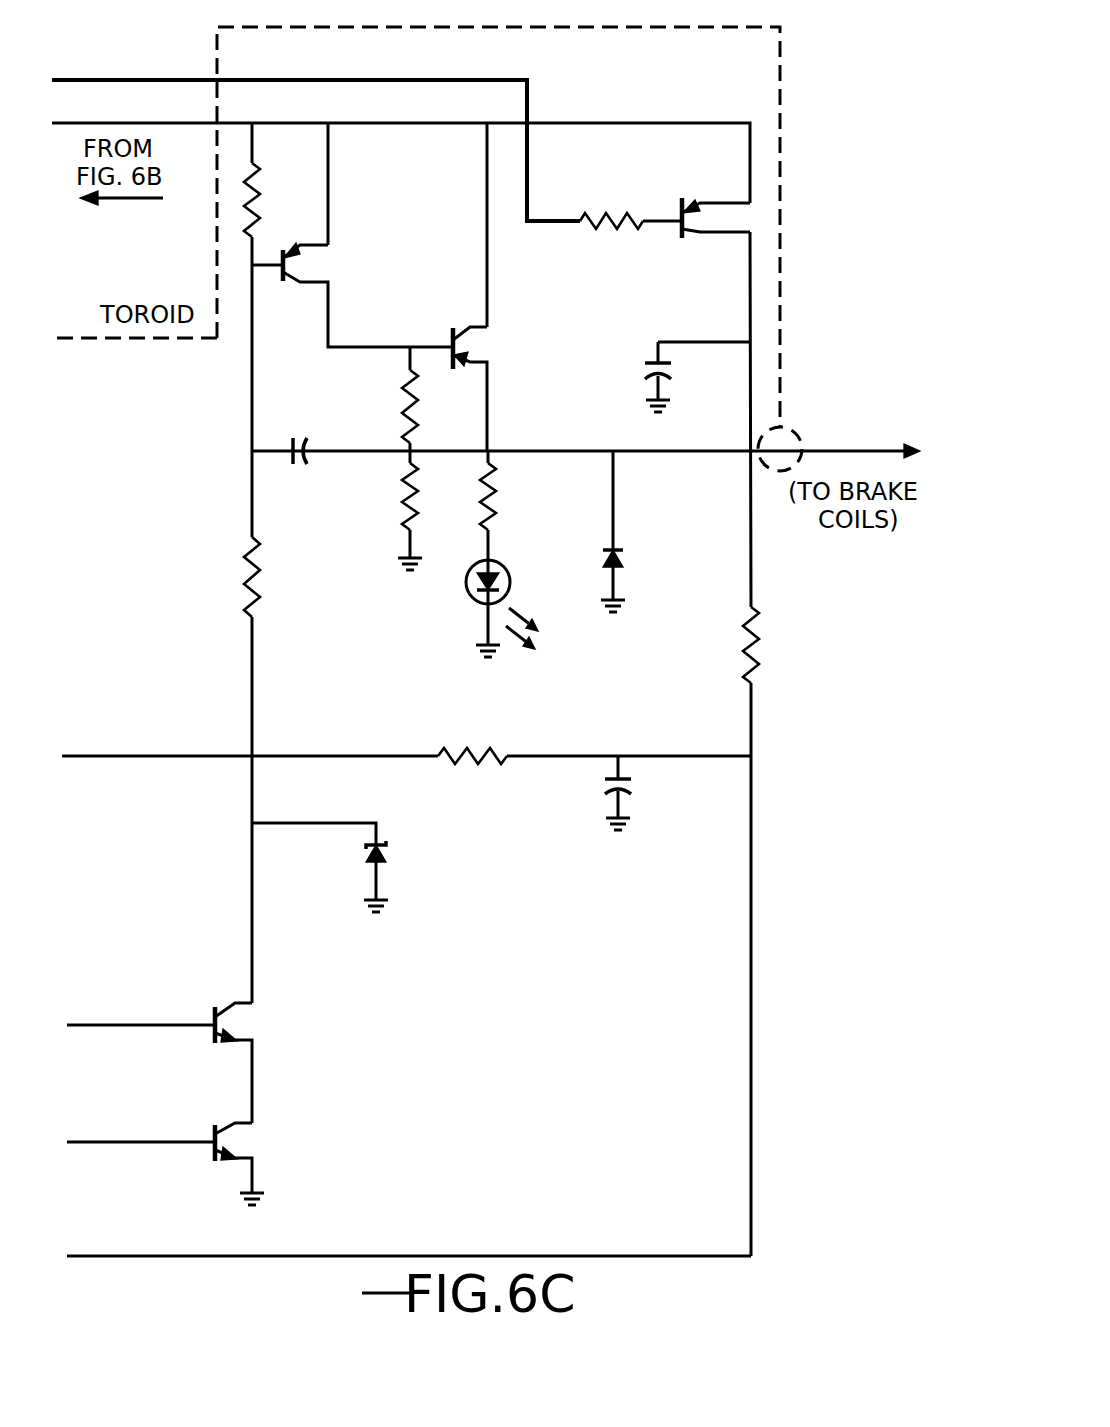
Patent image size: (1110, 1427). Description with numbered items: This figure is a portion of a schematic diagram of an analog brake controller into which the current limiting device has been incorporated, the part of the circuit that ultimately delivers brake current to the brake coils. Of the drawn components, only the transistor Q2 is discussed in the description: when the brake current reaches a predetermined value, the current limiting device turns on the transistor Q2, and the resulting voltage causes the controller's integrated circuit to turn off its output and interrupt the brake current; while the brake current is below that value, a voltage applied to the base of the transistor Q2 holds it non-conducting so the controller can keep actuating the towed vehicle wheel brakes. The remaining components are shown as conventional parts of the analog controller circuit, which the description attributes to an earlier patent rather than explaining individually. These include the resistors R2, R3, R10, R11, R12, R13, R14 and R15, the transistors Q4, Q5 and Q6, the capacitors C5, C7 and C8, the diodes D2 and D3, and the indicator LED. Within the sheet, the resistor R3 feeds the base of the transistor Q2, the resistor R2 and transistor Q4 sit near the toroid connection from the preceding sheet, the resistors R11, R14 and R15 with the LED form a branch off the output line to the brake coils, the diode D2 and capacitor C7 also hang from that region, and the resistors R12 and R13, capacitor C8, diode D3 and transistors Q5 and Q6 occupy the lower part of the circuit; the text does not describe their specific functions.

The resistor R2 is at (269, 200).
The transistor Q4 is at (331, 295).
The resistor R3 is at (631, 238).
The transistor Q2 is at (711, 240).
The transistor Q5 is at (304, 725).
The transistor Q6 is at (187, 1164).
The resistor R11 is at (435, 399).
The capacitor C7 is at (677, 377).
The capacitor C5 is at (303, 465).
The resistor R14 is at (433, 510).
The resistor R15 is at (514, 505).
The light emitting diode LED is at (517, 608).
The diode D2 is at (636, 531).
The resistor R10 is at (289, 577).
The resistor R13 is at (779, 645).
The resistor R12 is at (472, 772).
The capacitor C8 is at (637, 793).
The zener diode D3 is at (345, 876).